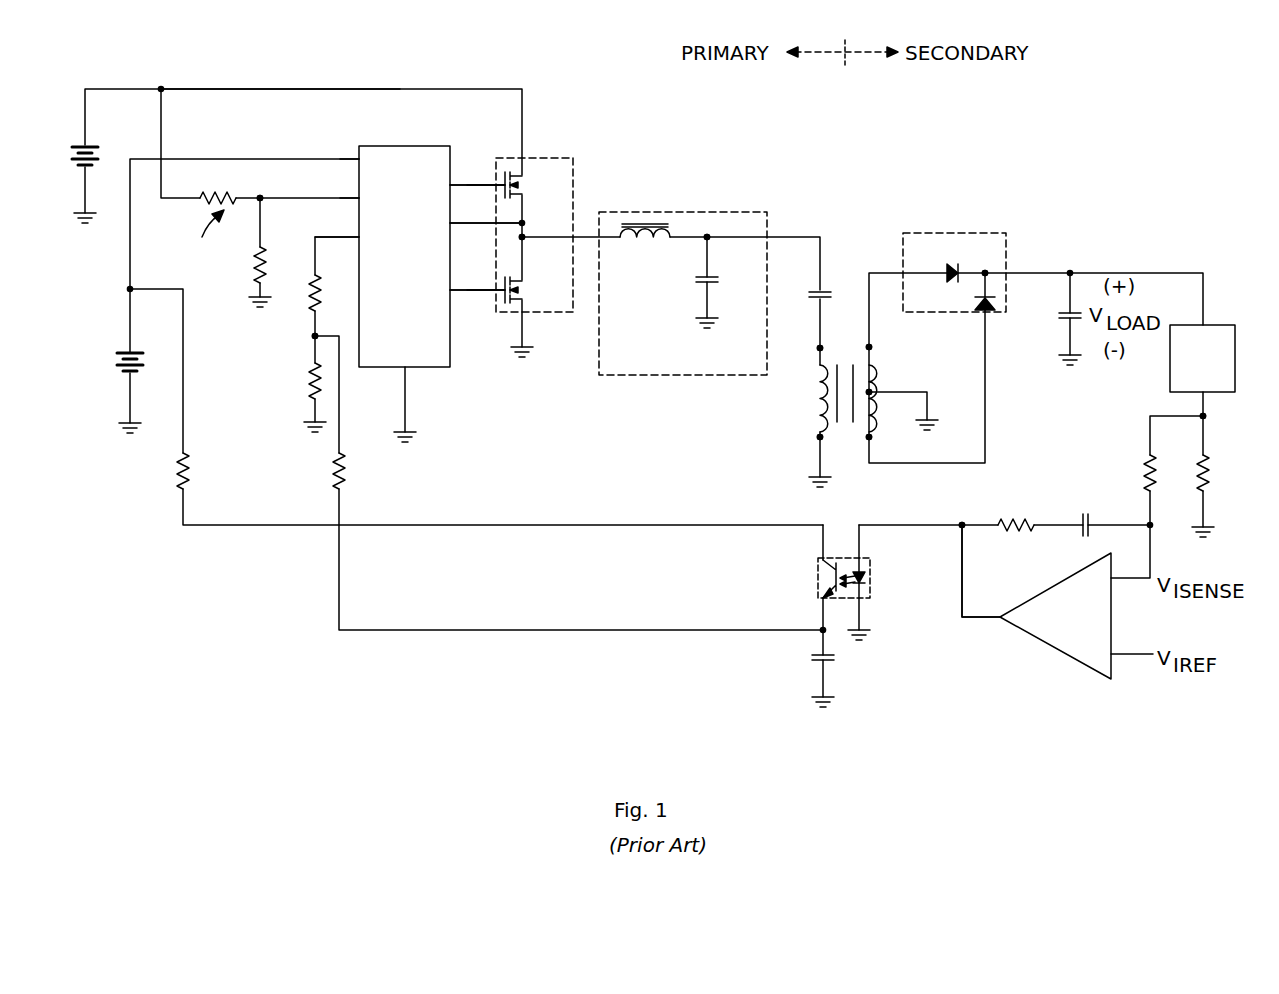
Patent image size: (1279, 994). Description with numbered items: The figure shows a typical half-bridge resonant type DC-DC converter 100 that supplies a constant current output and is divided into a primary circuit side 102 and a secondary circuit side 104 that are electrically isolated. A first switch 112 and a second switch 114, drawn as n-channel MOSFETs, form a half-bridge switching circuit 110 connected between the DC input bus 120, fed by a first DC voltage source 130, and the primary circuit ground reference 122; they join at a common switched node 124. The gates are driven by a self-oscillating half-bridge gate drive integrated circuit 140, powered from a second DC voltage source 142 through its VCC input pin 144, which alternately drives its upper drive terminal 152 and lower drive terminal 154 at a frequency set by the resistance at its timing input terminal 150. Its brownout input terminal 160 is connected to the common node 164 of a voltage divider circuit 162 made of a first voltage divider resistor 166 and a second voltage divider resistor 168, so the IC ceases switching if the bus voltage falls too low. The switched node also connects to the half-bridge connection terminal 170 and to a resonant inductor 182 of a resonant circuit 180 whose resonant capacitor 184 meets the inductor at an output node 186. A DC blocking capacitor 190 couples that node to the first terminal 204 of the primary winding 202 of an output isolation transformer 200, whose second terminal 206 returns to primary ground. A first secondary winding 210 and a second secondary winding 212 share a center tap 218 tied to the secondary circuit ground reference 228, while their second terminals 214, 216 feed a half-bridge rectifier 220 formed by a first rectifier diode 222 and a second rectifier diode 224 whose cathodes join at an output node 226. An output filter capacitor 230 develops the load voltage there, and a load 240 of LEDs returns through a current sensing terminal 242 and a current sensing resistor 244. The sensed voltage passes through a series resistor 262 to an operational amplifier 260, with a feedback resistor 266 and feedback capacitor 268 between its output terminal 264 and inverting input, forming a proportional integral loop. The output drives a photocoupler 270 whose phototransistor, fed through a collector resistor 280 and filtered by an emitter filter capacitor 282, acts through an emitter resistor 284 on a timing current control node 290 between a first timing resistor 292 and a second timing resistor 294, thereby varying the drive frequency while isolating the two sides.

The half-bridge resonant type DC-DC converter 100 is at (1110, 194).
The primary circuit side 102 is at (771, 147).
The secondary circuit side 104 is at (917, 147).
The half-bridge switching circuit 110 is at (522, 217).
The first switch 112 is at (518, 192).
The second switch 114 is at (518, 297).
The DC input bus 120 is at (300, 89).
The primary circuit ground reference 122 is at (85, 213).
The common switched node 124 is at (523, 236).
The first DC voltage source 130 is at (85, 145).
The self-oscillating half-bridge gate drive integrated circuit 140 is at (381, 146).
The second DC voltage source 142 is at (130, 352).
The VCC input pin 144 is at (359, 159).
The timing input terminal 150 is at (359, 237).
The upper drive terminal 152 is at (465, 185).
The lower drive terminal 154 is at (455, 291).
The brownout input terminal 160 is at (359, 198).
The voltage divider circuit 162 is at (199, 236).
The common node 164 is at (260, 198).
The first voltage divider resistor 166 is at (225, 196).
The second voltage divider resistor 168 is at (258, 258).
The half-bridge connection terminal 170 is at (455, 224).
The resonant circuit 180 is at (683, 277).
The resonant inductor 182 is at (640, 242).
The resonant capacitor 184 is at (712, 281).
The output node 186 is at (710, 239).
The DC blocking capacitor 190 is at (823, 292).
The output isolation transformer 200 is at (862, 413).
The primary winding 202 is at (818, 398).
The first terminal 204 is at (818, 348).
The second terminal 206 is at (818, 437).
The first secondary winding 210 is at (878, 375).
The second secondary winding 212 is at (877, 412).
The second terminal of first secondary winding 214 is at (870, 347).
The second terminal of second secondary winding 216 is at (871, 438).
The center tap 218 is at (906, 377).
The half-bridge rectifier 220 is at (979, 272).
The first rectifier diode 222 is at (947, 270).
The second rectifier diode 224 is at (985, 314).
The output node 226 is at (988, 271).
The secondary circuit ground reference 228 is at (929, 420).
The output filter capacitor 230 is at (1068, 314).
The load 240 is at (1215, 325).
The current sensing terminal 242 is at (1205, 418).
The current sensing resistor 244 is at (1207, 474).
The operational amplifier 260 is at (1055, 648).
The series resistor 262 is at (1146, 466).
The output terminal 264 is at (999, 619).
The feedback resistor 266 is at (1020, 536).
The feedback capacitor 268 is at (1083, 521).
The photocoupler 270 is at (818, 580).
The collector resistor 280 is at (188, 465).
The emitter filter capacitor 282 is at (828, 658).
The emitter resistor 284 is at (344, 465).
The timing current control node 290 is at (315, 336).
The first timing resistor 292 is at (312, 296).
The second timing resistor 294 is at (312, 386).